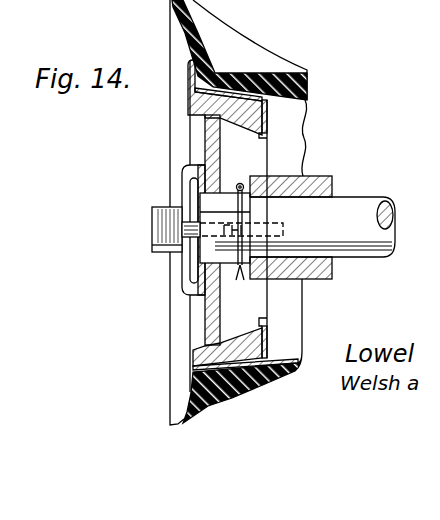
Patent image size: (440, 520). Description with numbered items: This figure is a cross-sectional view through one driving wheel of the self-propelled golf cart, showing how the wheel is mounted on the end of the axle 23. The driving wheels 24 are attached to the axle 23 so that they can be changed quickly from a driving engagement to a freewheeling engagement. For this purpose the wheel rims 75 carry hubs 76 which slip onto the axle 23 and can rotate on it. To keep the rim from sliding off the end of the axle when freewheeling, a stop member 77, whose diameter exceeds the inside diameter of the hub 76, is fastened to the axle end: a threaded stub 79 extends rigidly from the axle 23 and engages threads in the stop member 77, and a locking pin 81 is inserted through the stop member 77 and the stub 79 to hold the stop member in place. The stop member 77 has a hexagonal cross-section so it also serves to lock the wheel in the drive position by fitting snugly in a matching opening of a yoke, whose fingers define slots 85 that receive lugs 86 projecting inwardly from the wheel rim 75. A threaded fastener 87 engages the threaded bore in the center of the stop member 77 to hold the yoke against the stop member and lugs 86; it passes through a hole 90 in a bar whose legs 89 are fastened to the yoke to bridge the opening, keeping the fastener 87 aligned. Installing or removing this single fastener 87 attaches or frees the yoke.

The axle 23 is at (358, 207).
The driving wheels 24 is at (285, 82).
The wheel rims 75 is at (267, 137).
The hubs 76 is at (332, 183).
The stop member 77 is at (217, 253).
The threaded stub 79 is at (283, 236).
The locking pin 81 is at (238, 185).
The slots 85 is at (250, 176).
The lugs 86 is at (267, 113).
The threaded fastener 87 is at (153, 228).
The legs 89 is at (184, 172).
The hole 90 is at (183, 197).